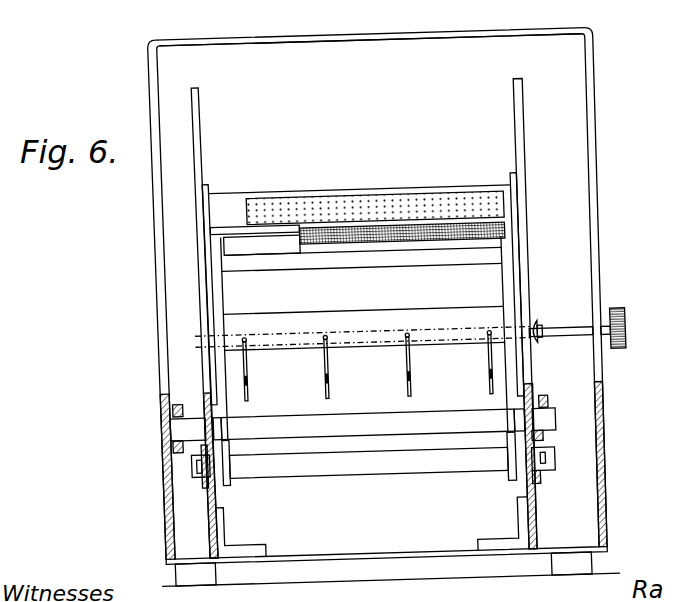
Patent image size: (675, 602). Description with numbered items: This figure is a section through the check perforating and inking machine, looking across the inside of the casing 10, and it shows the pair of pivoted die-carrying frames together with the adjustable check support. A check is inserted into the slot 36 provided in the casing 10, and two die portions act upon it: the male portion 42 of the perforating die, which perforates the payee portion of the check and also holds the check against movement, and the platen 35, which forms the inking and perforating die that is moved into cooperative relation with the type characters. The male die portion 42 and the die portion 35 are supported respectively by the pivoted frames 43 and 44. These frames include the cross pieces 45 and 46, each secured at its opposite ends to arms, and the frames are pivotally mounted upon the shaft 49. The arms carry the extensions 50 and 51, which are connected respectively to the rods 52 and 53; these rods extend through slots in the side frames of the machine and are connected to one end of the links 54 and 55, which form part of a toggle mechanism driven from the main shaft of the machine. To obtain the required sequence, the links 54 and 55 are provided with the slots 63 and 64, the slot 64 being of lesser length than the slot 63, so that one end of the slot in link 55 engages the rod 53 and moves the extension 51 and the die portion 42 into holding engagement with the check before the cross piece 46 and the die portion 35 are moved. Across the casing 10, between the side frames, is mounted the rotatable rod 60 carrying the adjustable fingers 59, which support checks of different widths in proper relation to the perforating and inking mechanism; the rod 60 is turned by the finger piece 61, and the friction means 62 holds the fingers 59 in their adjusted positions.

The casing 10 is at (601, 181).
The platen 35 is at (435, 246).
The slot 36 is at (544, 35).
The male portion of the perforating die 42 is at (422, 204).
The pivoted frame 43 is at (215, 183).
The pivoted frame 44 is at (223, 298).
The cross piece 45 is at (318, 194).
The cross piece 46 is at (295, 238).
The shaft 49 is at (372, 307).
The extension 50 is at (218, 426).
The extension 51 is at (222, 480).
The rod 52 is at (358, 419).
The rod 53 is at (372, 470).
The link 54 is at (175, 399).
The link 55 is at (199, 483).
The adjustable fingers 59 is at (322, 386).
The rotatable rod 60 is at (566, 339).
The finger piece 61 is at (619, 320).
The friction means 62 is at (534, 326).
The slot 63 is at (166, 430).
The slot 64 is at (186, 466).